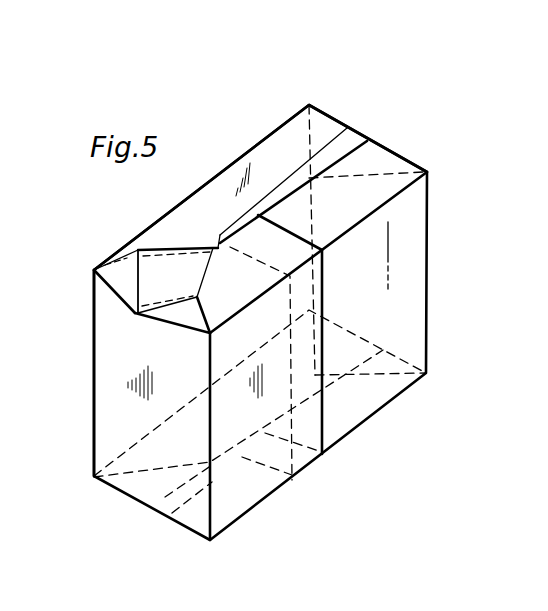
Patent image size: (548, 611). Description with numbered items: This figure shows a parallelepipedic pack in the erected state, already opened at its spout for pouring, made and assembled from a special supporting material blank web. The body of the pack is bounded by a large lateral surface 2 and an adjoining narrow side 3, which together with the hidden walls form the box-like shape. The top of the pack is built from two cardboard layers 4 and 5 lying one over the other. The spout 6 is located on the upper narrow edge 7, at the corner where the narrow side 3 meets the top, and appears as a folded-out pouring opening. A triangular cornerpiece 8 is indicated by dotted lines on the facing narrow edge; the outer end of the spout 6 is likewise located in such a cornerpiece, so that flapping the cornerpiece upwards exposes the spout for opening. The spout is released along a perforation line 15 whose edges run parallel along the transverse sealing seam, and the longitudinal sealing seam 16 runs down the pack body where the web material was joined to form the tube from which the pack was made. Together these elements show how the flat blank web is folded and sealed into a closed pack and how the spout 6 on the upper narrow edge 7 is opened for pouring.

The large lateral surface 2 is at (417, 333).
The narrow side 3 is at (178, 395).
The cardboard layer 4 is at (218, 190).
The cardboard layer 5 is at (388, 195).
The spout 6 is at (133, 281).
The upper narrow edge 7 is at (172, 323).
The triangular cornerpiece 8 is at (382, 157).
The perforation line 15 is at (152, 252).
The longitudinal sealing seam 16 is at (325, 275).